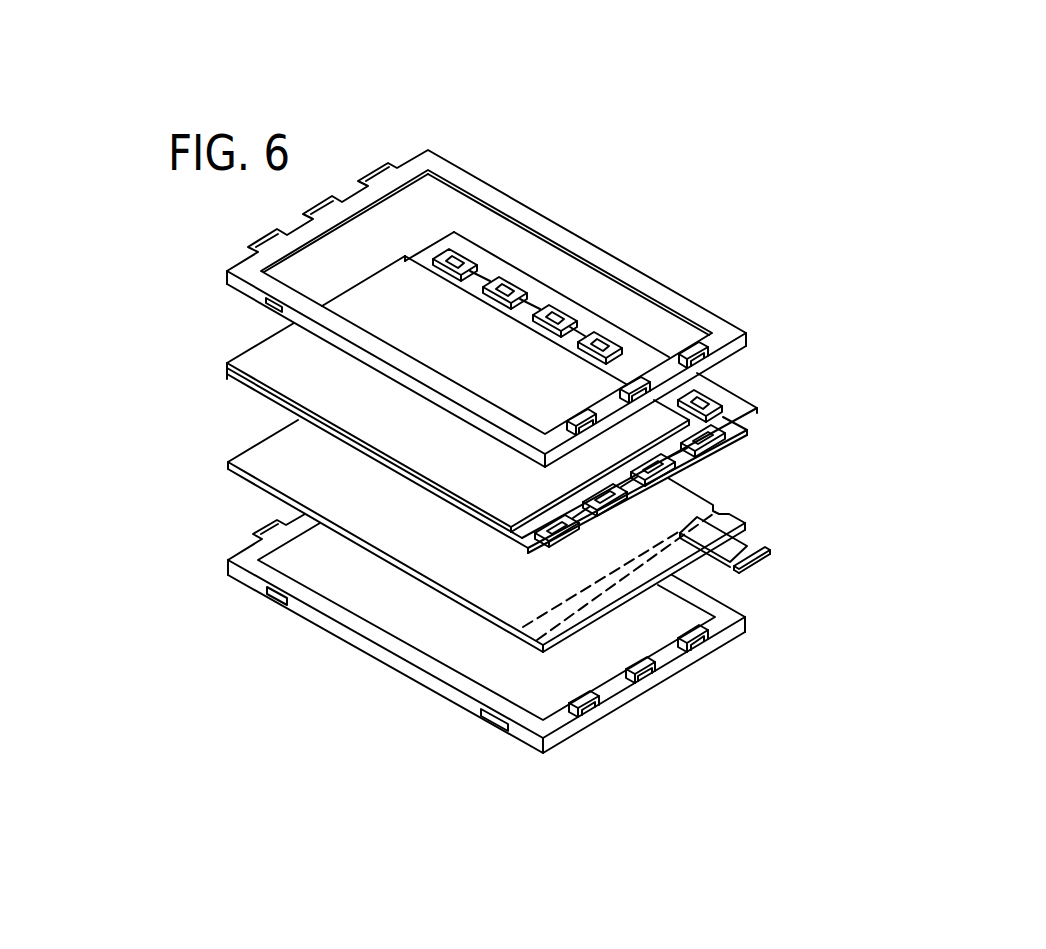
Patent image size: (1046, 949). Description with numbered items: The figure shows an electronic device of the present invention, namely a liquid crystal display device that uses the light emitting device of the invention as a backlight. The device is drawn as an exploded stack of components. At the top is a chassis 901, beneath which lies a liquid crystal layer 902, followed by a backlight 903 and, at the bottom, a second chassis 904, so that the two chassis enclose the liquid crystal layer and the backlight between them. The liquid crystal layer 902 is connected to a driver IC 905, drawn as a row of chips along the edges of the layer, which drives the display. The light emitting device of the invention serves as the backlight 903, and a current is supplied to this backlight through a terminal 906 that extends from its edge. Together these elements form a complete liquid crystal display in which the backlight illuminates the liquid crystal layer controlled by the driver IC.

The chassis 901 is at (473, 183).
The liquid crystal layer 902 is at (267, 362).
The backlight 903 is at (270, 473).
The chassis 904 is at (545, 756).
The driver IC 905 is at (710, 397).
The terminal 906 is at (738, 548).